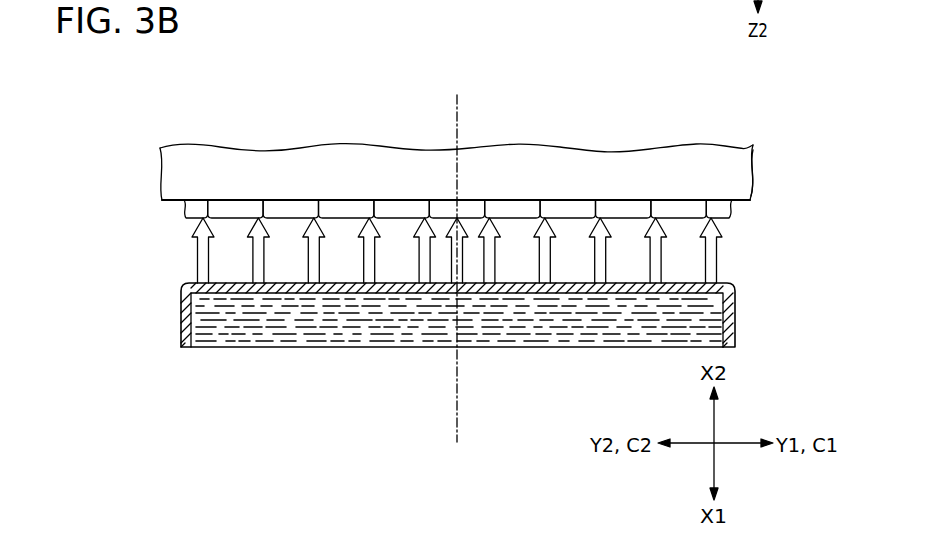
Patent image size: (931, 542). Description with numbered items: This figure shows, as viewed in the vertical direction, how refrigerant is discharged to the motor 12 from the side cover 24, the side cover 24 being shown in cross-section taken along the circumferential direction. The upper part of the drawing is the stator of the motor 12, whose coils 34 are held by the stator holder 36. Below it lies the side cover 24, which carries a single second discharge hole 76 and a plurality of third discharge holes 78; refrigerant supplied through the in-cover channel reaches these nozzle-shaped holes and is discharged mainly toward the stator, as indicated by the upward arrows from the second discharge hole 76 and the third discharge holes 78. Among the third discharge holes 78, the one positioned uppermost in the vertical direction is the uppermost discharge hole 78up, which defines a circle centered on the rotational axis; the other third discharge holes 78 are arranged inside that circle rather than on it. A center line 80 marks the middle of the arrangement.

The motor 12 is at (185, 110).
The side cover 24 is at (162, 332).
The coils 34 is at (347, 207).
The stator holder 36 is at (745, 162).
The second discharge hole 76 is at (459, 282).
The third discharge holes 78 is at (198, 283).
The uppermost discharge hole 78up is at (487, 284).
The center line 80 is at (459, 416).